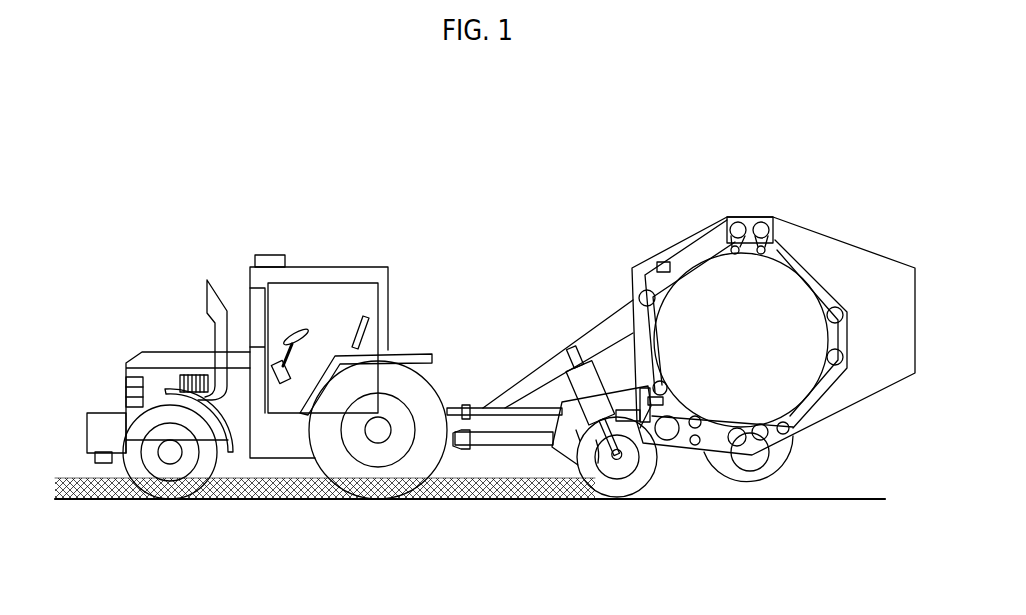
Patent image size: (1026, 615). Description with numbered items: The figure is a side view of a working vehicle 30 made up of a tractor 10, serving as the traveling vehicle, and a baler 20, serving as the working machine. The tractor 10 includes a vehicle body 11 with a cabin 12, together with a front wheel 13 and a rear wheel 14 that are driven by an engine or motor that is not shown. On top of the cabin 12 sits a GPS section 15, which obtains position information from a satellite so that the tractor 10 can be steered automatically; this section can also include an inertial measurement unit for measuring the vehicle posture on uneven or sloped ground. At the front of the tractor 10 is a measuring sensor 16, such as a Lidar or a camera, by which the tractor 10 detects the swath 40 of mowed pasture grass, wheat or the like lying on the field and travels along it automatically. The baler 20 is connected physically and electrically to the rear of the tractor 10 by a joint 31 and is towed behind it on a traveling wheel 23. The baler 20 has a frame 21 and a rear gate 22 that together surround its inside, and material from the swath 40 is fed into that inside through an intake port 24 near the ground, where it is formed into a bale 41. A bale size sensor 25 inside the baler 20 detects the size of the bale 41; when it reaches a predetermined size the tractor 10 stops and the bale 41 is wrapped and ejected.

The tractor 10 is at (295, 397).
The vehicle body 11 is at (163, 352).
The cabin 12 is at (322, 313).
The front wheel 13 is at (173, 490).
The rear wheel 14 is at (380, 500).
The GPS section 15 is at (272, 255).
The measuring sensor 16 is at (103, 453).
The baler 20 is at (733, 338).
The frame 21 is at (720, 217).
The rear gate 22 is at (847, 397).
The traveling wheel 23 is at (762, 498).
The intake port 24 is at (587, 467).
The bale size sensor 25 is at (657, 262).
The working vehicle 30 is at (510, 151).
The joint 31 is at (466, 405).
The swath 40 is at (90, 497).
The bale 41 is at (728, 328).